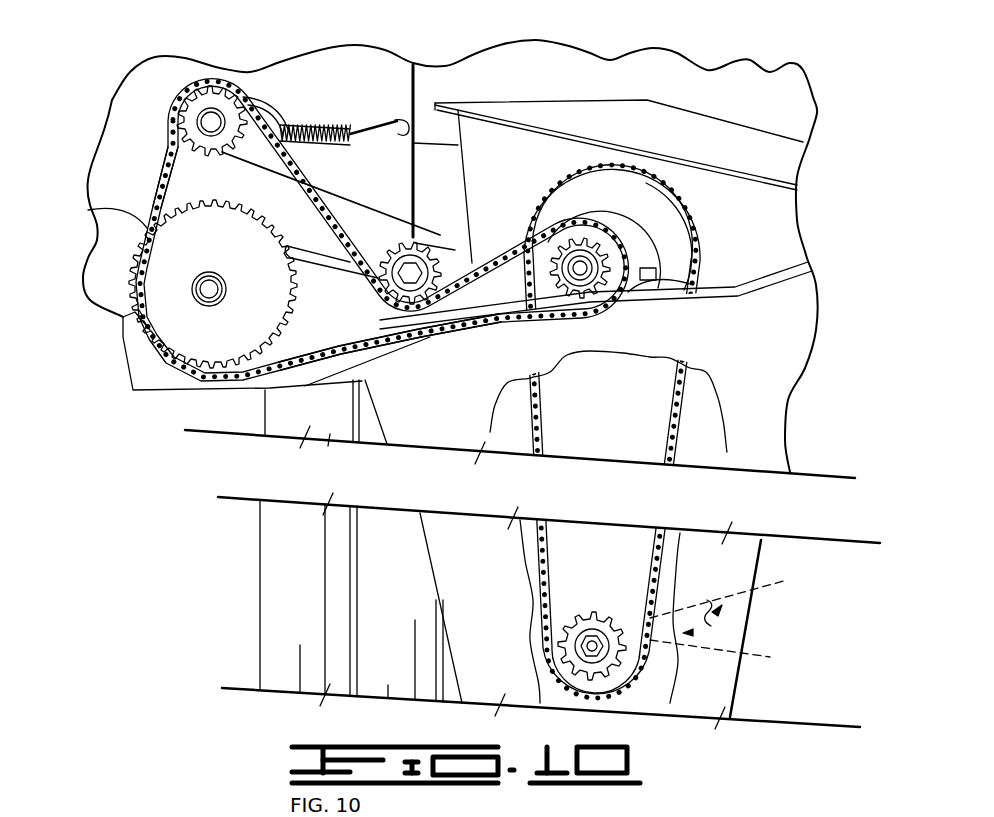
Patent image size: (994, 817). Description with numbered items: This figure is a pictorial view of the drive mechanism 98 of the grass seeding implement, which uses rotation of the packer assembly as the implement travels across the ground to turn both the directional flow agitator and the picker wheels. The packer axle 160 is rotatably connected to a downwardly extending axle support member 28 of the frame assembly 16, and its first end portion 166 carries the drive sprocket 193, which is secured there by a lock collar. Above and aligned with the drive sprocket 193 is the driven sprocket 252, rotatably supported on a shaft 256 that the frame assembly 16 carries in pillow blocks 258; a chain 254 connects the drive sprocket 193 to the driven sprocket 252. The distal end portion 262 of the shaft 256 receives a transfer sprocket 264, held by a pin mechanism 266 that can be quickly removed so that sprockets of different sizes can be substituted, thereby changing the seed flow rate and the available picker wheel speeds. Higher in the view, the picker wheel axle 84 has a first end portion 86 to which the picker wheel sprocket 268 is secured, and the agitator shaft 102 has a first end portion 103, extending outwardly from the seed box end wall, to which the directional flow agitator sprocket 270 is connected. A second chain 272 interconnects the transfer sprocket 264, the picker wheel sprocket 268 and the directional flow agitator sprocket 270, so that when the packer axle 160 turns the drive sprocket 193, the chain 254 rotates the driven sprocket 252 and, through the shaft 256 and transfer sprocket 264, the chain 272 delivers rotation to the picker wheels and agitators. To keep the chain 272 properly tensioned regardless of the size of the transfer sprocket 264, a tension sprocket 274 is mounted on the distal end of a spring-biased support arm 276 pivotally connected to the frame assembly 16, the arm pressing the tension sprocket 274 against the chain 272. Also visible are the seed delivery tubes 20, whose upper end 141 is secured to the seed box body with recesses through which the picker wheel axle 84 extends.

The frame assembly 16 is at (740, 287).
The seed delivery tubes 20 is at (258, 612).
The axle support member 28 is at (742, 627).
The picker wheel axle 84 is at (210, 300).
The first end portion 86 is at (207, 270).
The drive mechanism 98 is at (447, 212).
The agitator shaft 102 is at (230, 94).
The first end portion 103 is at (197, 120).
The upper end 141 is at (280, 408).
The packer axle 160 is at (787, 580).
The first end portion 166 is at (770, 657).
The drive sprocket 193 is at (613, 560).
The driven sprocket 252 is at (665, 220).
The chain 254 is at (710, 372).
The shaft 256 is at (593, 303).
The pillow blocks 258 is at (667, 280).
The distal end portion 262 is at (563, 317).
The transfer sprocket 264 is at (587, 240).
The pin mechanism 266 is at (557, 313).
The picker wheel sprocket 268 is at (125, 357).
The directional flow agitator sprocket 270 is at (187, 150).
The chain 272 is at (100, 210).
The tension sprocket 274 is at (411, 242).
The spring-biased support arm 276 is at (310, 262).